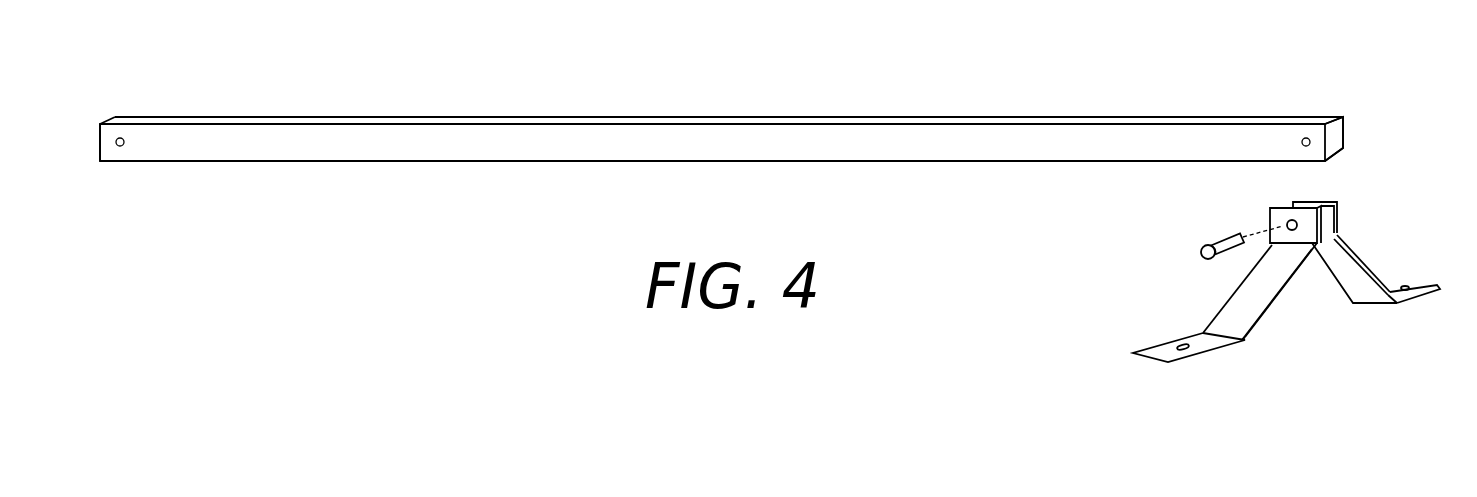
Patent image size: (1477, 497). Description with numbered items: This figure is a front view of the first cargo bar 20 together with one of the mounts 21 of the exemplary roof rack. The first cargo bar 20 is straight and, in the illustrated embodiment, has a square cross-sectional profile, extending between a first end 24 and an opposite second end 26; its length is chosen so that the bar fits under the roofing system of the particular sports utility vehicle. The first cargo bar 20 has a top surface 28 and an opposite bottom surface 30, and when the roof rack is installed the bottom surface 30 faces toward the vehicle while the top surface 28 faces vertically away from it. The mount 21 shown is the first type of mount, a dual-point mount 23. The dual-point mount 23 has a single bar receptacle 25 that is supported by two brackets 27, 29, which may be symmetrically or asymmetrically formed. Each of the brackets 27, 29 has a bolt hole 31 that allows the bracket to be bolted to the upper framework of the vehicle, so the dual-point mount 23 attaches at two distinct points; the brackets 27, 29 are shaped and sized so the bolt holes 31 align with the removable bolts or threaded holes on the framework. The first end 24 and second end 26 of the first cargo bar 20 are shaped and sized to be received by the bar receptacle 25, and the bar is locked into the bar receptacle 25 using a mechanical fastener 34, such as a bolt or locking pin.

The first cargo bar 20 is at (912, 118).
The mount 21 is at (1212, 223).
The dual-point mount 23 is at (1368, 232).
The first end 24 is at (100, 145).
The bar receptacle 25 is at (1323, 220).
The second end 26 is at (1337, 137).
The bracket 27 is at (1240, 302).
The top surface 28 is at (355, 118).
The bracket 29 is at (1347, 267).
The bottom surface 30 is at (355, 162).
The bolt hole 31 is at (1188, 341).
The mechanical fastener 34 is at (1202, 250).